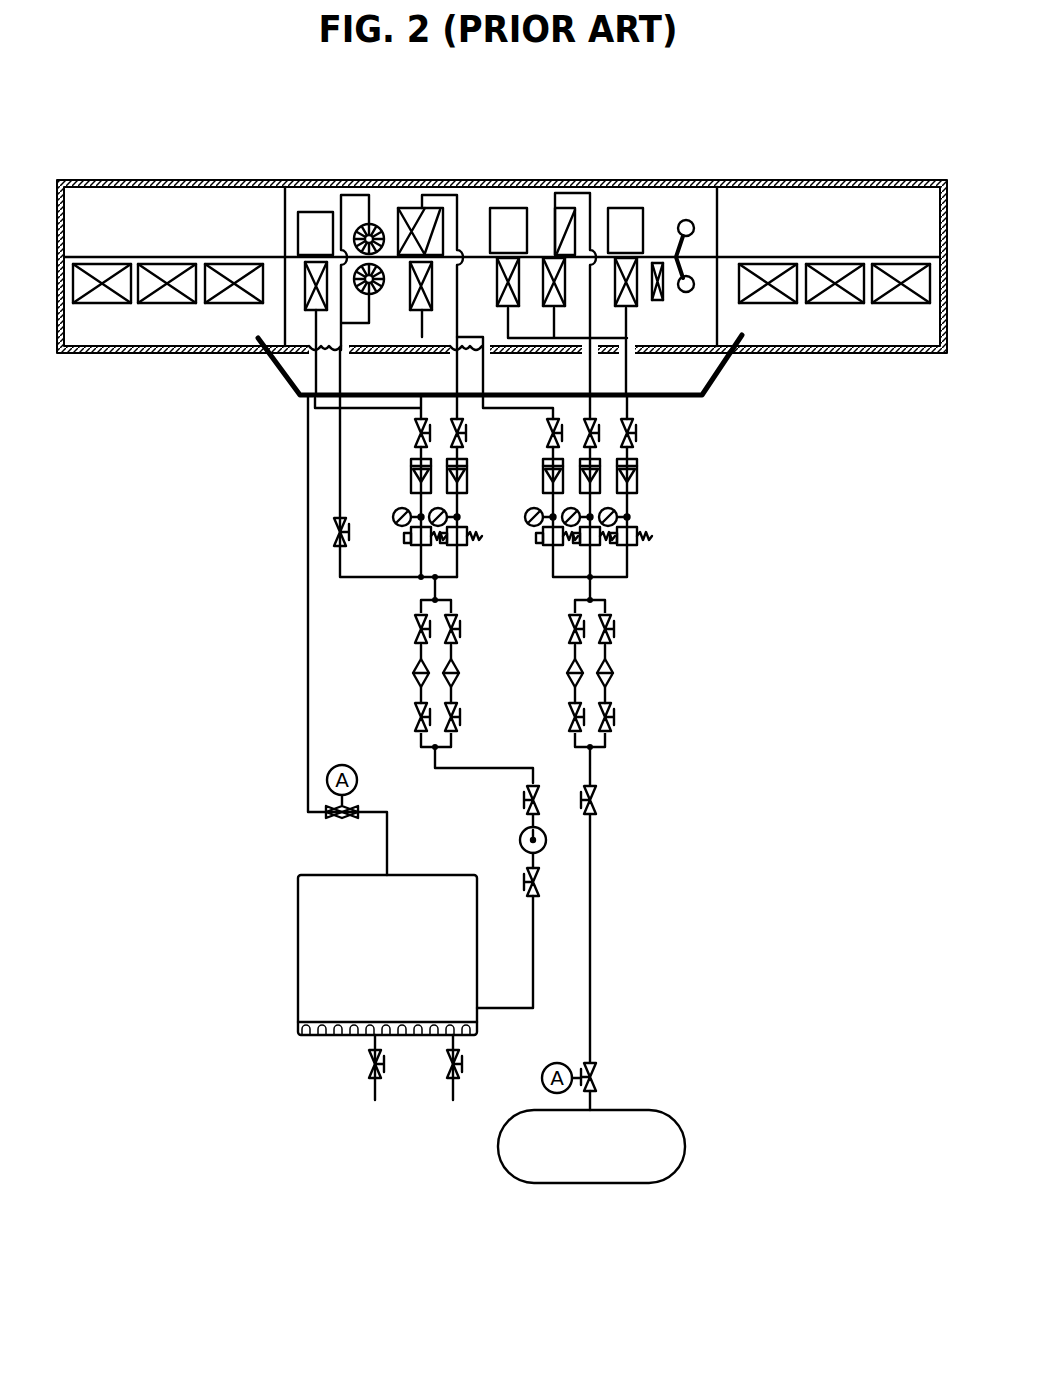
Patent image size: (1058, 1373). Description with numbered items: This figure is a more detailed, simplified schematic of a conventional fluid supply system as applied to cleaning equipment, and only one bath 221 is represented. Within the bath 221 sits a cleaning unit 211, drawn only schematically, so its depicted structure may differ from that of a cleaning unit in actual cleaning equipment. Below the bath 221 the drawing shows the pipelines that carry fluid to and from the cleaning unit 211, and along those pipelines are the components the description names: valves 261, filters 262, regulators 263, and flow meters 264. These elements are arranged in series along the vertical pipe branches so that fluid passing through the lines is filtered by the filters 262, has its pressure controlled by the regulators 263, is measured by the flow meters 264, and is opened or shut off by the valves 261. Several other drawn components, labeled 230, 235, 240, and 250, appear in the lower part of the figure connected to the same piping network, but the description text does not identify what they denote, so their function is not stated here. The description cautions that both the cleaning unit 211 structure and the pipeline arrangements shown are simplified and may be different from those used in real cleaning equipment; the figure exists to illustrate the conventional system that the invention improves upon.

The cleaning unit 211 is at (656, 213).
The bath 221 is at (717, 377).
The chemical tank 230 is at (298, 953).
The heater plate 235 is at (298, 1027).
The pump 240 is at (520, 840).
The chemical supply tank 250 is at (591, 1183).
The valves 261 is at (600, 800).
The filters 262 is at (618, 673).
The regulators 263 is at (642, 536).
The flow meters 264 is at (638, 478).